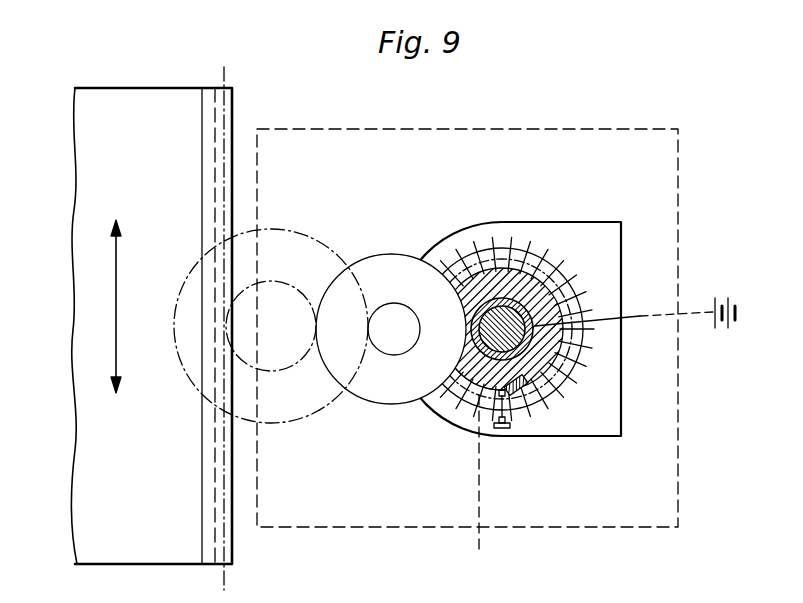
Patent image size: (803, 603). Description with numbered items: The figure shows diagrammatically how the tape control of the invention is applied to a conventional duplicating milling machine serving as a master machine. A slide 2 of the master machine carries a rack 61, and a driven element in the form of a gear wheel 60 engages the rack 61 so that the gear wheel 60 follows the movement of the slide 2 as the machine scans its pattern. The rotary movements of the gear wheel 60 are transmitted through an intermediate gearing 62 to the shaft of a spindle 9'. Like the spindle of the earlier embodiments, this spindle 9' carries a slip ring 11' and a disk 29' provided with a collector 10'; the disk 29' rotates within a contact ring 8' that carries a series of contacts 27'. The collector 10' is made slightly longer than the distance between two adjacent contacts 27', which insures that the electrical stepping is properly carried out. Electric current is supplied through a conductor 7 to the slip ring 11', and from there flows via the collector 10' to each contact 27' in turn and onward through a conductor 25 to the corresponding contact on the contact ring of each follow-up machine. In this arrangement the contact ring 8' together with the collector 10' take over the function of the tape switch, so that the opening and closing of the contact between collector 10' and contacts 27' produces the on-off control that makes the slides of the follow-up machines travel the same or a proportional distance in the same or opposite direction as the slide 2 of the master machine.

The slide 2 is at (160, 105).
The rack 61 is at (220, 105).
The gear wheel 60 is at (275, 278).
The intermediate gearing 62 is at (353, 245).
The conductor 7 is at (645, 319).
The contact ring 8' is at (502, 288).
The disk 29' is at (517, 297).
The spindle 9' is at (461, 410).
The slip ring 11' is at (564, 326).
The collector 10' is at (559, 434).
The contacts 27' is at (519, 450).
The conductor 25 is at (478, 486).